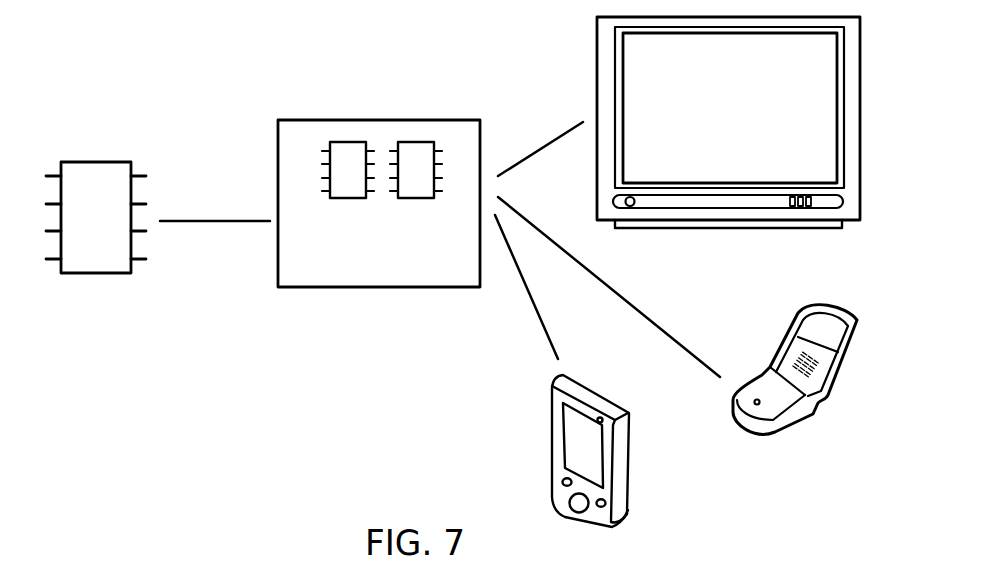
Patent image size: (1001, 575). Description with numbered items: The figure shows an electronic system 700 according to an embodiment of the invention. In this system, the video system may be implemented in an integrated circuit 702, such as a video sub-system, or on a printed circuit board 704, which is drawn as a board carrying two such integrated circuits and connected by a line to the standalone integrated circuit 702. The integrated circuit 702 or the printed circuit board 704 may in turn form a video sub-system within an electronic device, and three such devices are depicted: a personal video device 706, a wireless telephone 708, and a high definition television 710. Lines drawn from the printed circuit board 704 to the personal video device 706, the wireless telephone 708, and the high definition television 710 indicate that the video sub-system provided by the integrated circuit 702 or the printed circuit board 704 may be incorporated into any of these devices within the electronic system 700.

The electronic system 700 is at (131, 42).
The integrated circuit 702 is at (96, 244).
The printed circuit board 704 is at (392, 254).
The personal video device 706 is at (583, 450).
The wireless telephone 708 is at (825, 340).
The high definition television 710 is at (675, 117).